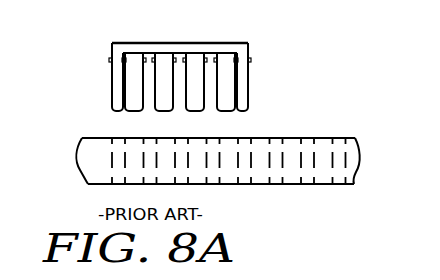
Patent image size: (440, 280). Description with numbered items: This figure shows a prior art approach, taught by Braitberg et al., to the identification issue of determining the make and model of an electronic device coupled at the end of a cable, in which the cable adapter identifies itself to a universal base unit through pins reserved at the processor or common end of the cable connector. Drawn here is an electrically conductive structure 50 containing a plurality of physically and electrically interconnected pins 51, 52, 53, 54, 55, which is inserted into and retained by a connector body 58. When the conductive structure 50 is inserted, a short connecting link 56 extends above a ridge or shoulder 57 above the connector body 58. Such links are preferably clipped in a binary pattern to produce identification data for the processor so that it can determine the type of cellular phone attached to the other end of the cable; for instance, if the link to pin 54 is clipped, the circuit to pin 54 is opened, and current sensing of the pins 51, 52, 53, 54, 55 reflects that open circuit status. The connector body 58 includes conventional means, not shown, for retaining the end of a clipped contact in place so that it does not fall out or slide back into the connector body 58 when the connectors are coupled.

The electrically conductive structure 50 is at (184, 76).
The pin 51 is at (112, 60).
The pin 52 is at (142, 105).
The pin 53 is at (178, 107).
The pin 54 is at (213, 111).
The pin 55 is at (242, 89).
The connecting link 56 is at (137, 45).
The ridge or shoulder 57 is at (252, 62).
The connector body 58 is at (93, 175).